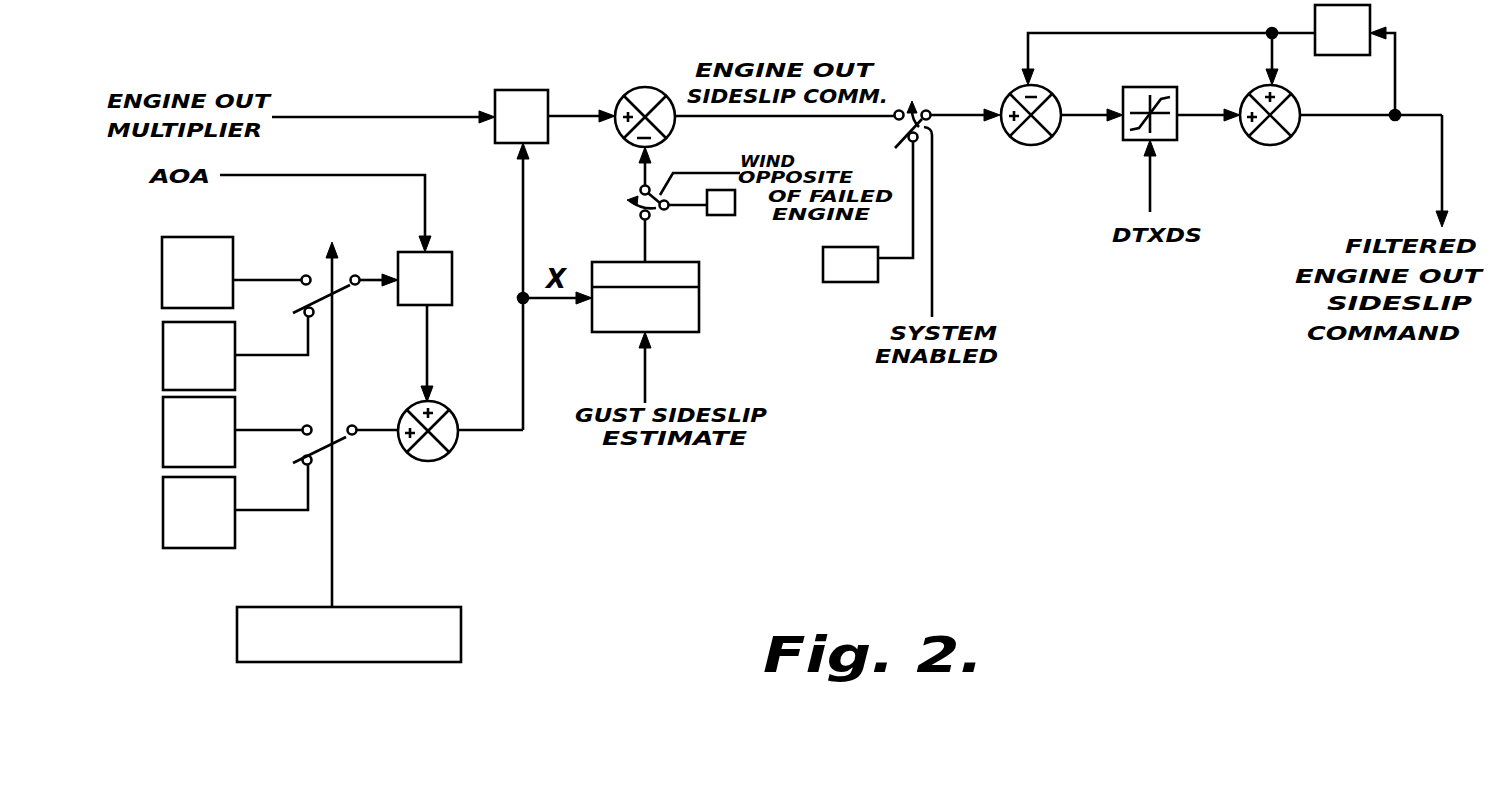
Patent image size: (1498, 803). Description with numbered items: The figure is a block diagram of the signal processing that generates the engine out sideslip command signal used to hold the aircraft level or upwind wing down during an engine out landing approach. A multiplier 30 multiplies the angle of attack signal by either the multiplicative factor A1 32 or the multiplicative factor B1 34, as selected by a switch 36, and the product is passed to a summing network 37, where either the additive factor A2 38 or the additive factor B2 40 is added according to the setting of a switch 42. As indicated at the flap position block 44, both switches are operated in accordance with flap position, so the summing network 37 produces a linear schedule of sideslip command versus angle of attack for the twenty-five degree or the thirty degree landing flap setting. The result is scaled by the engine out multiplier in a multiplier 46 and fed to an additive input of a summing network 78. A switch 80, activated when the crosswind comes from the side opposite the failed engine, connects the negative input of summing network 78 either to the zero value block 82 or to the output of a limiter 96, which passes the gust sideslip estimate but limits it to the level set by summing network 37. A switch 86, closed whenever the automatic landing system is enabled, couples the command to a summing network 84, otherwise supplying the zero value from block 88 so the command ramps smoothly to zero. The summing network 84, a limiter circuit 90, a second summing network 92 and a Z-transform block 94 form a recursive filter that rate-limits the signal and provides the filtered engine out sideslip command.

The multiplier 30 is at (445, 252).
The multiplicative factor A1 32 is at (236, 250).
The multiplicative factor B1 34 is at (238, 335).
The switch 36 is at (340, 290).
The summing network 37 is at (450, 408).
The additive factor A2 38 is at (238, 410).
The additive factor B2 40 is at (238, 492).
The switch 42 is at (342, 433).
The flap position block 44 is at (403, 607).
The multiplier 46 is at (515, 90).
The summing network 78 is at (636, 88).
The switch 80 is at (640, 212).
The zero value block 82 is at (718, 215).
The summing network 84 is at (1030, 146).
The switch 86 is at (925, 107).
The zero value block 88 is at (838, 282).
The limiter circuit 90 is at (1160, 87).
The second summing network 92 is at (1282, 144).
The Z-transform block 94 is at (1370, 20).
The limiter 96 is at (699, 310).